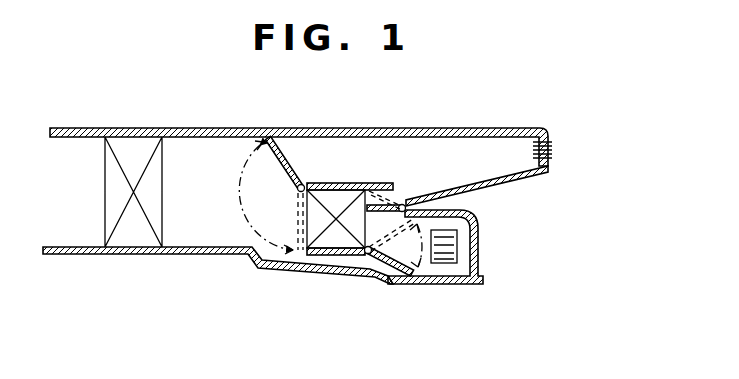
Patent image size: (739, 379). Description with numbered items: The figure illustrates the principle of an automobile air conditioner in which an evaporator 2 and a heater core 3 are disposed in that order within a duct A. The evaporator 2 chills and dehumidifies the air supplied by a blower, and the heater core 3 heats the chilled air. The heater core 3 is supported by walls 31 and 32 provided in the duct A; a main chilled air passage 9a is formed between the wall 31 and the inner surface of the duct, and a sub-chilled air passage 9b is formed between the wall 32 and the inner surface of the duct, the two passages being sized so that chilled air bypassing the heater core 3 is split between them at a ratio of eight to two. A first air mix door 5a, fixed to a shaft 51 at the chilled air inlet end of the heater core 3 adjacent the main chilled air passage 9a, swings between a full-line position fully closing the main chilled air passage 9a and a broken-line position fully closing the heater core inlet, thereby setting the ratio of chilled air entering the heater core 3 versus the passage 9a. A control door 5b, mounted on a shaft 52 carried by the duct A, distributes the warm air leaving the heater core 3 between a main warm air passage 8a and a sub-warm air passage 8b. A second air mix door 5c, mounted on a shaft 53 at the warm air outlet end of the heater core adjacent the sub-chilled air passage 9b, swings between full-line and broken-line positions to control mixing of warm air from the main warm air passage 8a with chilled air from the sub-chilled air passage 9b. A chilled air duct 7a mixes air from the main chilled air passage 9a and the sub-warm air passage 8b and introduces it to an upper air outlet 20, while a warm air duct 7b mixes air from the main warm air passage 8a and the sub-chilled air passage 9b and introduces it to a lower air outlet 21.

The duct A is at (190, 128).
The evaporator 2 is at (107, 197).
The heater core 3 is at (313, 258).
The wall 31 is at (318, 183).
The wall 32 is at (332, 256).
The first air mix door 5a is at (285, 158).
The control door 5b is at (404, 206).
The second air mix door 5c is at (405, 280).
The shaft 51 is at (297, 191).
The shaft 52 is at (457, 199).
The shaft 53 is at (368, 256).
The chilled air duct 7a is at (460, 143).
The warm air duct 7b is at (442, 266).
The main warm air passage 8a is at (388, 283).
The sub-warm air passage 8b is at (392, 200).
The main chilled air passage 9a is at (370, 147).
The sub-chilled air passage 9b is at (345, 266).
The upper air outlet 20 is at (552, 151).
The lower air outlet 21 is at (460, 285).